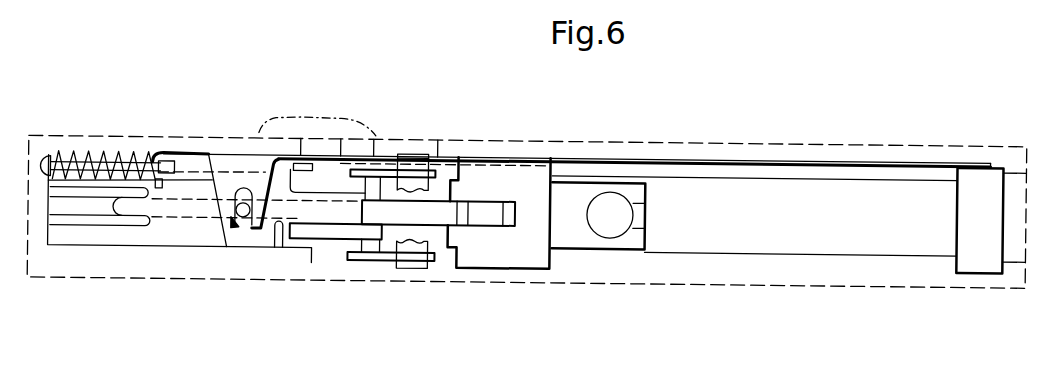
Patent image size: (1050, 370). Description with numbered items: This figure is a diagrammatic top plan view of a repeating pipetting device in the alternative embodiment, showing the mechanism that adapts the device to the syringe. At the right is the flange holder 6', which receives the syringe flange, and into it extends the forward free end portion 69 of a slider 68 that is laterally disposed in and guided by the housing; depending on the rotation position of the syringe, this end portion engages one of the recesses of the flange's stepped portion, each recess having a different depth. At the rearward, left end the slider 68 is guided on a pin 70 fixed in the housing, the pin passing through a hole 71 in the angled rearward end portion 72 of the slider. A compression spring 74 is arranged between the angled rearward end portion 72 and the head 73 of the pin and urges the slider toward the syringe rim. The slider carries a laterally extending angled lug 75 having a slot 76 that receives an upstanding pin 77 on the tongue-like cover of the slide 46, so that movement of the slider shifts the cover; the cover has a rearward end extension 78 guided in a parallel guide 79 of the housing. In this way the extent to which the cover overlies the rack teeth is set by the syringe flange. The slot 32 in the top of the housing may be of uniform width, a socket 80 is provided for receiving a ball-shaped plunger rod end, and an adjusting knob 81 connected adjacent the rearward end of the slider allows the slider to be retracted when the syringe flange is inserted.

The slot 32 is at (712, 176).
The slide 46 is at (323, 204).
The slider 68 is at (851, 160).
The forward free end portion 69 is at (979, 160).
The pin 70 is at (94, 175).
The hole 71 is at (148, 160).
The angled rearward end portion 72 is at (158, 190).
The head 73 is at (46, 166).
The compression spring 74 is at (77, 178).
The angled lug 75 is at (230, 184).
The slot 76 is at (243, 226).
The upstanding pin 77 is at (228, 230).
The rearward end extension 78 is at (128, 215).
The parallel guide 79 is at (70, 225).
The socket 80 is at (599, 206).
The adjusting knob 81 is at (318, 136).
The flange holder 6' is at (1012, 183).